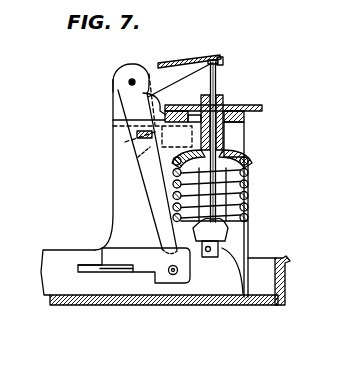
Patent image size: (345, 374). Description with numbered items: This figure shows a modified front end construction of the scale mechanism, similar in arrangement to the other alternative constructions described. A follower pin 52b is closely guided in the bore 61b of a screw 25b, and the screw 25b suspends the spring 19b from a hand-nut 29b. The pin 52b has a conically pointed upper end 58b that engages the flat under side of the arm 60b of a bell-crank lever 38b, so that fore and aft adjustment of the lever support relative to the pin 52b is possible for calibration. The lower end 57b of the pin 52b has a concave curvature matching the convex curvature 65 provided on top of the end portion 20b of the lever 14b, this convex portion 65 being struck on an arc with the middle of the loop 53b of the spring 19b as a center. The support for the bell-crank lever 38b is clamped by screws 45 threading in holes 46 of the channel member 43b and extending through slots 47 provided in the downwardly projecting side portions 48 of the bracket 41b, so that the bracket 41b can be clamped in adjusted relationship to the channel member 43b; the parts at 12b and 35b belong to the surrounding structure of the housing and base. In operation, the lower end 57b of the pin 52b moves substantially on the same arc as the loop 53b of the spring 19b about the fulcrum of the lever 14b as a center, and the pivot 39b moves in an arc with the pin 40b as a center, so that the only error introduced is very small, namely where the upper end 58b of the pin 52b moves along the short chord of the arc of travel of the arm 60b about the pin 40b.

The housing 12b is at (285, 284).
The lever 14b is at (193, 253).
The spring 19b is at (250, 192).
The end portion of lever 20b is at (249, 305).
The screw 25b is at (225, 134).
The housing block 29b is at (262, 112).
The slide plate 35b is at (93, 266).
The bell-crank lever 38b is at (150, 182).
The pivot 39b is at (165, 283).
The pin 40b is at (129, 83).
The lever head 41b is at (115, 100).
The base block 43b is at (78, 253).
The screws 45 is at (125, 142).
The holes 46 is at (152, 136).
The slots 47 is at (137, 133).
The downwardly projecting side portions 48 is at (134, 160).
The pin 52b is at (217, 78).
The loop of spring 53b is at (208, 257).
The lower end of pin 57b is at (168, 227).
The upper end of pin 58b is at (222, 63).
The arm of bell-crank lever 60b is at (222, 57).
The bore 61b is at (235, 107).
The convex curvature 65 is at (222, 248).